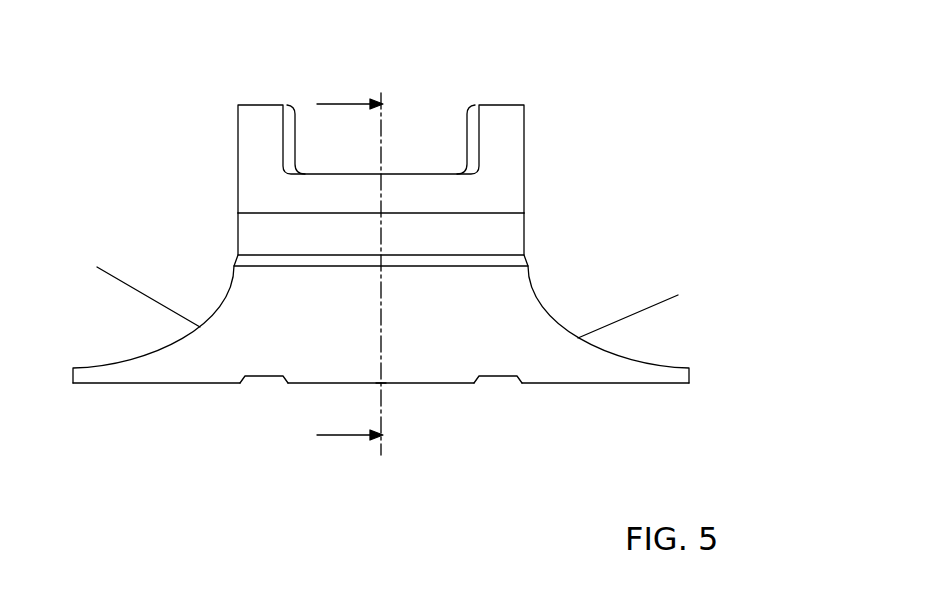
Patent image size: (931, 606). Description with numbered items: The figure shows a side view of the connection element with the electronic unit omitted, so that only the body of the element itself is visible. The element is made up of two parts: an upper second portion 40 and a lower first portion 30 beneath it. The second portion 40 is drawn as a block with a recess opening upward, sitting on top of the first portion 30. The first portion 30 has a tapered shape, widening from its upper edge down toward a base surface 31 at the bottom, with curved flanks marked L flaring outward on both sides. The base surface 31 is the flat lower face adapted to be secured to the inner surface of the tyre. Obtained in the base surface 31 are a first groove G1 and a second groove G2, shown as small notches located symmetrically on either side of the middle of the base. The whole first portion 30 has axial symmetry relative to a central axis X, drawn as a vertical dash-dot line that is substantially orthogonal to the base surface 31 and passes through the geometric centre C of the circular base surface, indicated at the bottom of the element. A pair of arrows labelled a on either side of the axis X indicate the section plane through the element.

The second portion 40 is at (513, 178).
The first portion 30 is at (523, 283).
The base surface 31 is at (640, 388).
The flared lateral line / curved flank L is at (383, 289).
The central axis X is at (385, 110).
The geometric centre C is at (382, 383).
The first groove G1 is at (500, 377).
The second groove G2 is at (268, 376).
The section line indication a is at (349, 271).